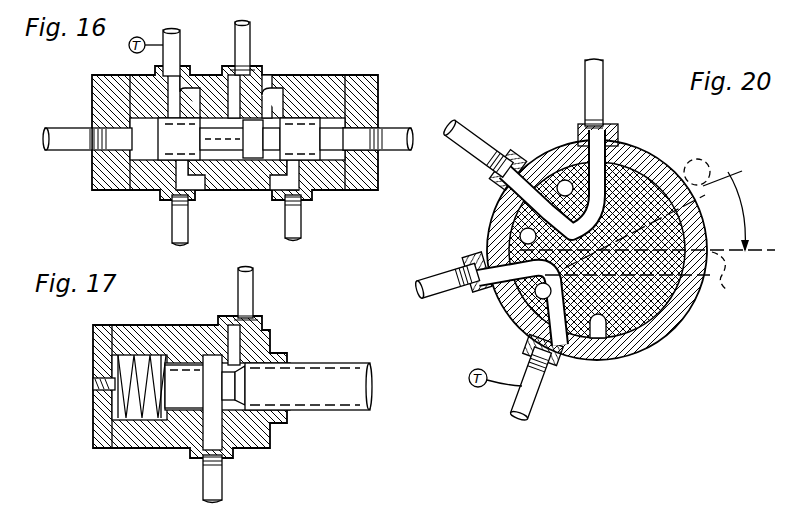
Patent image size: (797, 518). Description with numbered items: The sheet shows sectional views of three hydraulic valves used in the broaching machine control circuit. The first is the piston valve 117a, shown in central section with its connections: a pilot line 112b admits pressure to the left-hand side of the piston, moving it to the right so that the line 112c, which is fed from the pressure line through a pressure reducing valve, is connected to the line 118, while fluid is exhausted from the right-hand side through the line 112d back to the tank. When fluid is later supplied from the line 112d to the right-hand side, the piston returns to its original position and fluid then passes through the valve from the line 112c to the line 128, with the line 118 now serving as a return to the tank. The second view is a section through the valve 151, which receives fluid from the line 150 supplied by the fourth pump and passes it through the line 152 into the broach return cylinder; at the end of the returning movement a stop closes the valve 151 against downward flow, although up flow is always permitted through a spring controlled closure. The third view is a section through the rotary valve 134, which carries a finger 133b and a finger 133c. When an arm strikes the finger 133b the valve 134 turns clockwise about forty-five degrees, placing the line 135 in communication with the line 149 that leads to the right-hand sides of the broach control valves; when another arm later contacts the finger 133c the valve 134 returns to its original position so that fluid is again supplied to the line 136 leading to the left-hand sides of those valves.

In FIG. 16, the pilot line 112b is at (68, 108).
In FIG. 16, the line 112c is at (248, 42).
In FIG. 16, the line 112d is at (395, 128).
In FIG. 16, the piston valve 117a is at (330, 70).
In FIG. 16, the line 118 is at (188, 225).
In FIG. 16, the line 128 is at (301, 220).
In FIG. 17, the line 150 is at (253, 290).
In FIG. 17, the valve 151 is at (175, 320).
In FIG. 17, the line 152 is at (222, 477).
In FIG. 20, the finger 133b is at (727, 290).
In FIG. 20, the finger 133c is at (704, 150).
In FIG. 20, the valve 134 is at (680, 318).
In FIG. 20, the line 135 is at (603, 84).
In FIG. 20, the line 136 is at (470, 132).
In FIG. 20, the line 149 is at (450, 270).